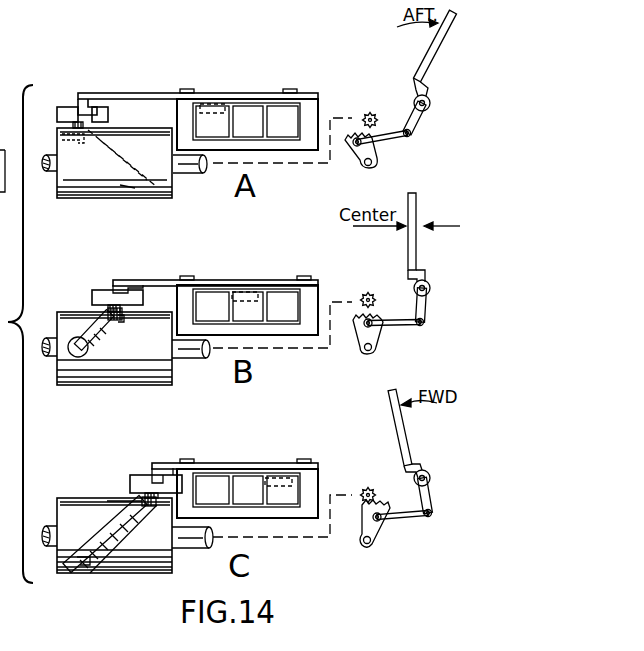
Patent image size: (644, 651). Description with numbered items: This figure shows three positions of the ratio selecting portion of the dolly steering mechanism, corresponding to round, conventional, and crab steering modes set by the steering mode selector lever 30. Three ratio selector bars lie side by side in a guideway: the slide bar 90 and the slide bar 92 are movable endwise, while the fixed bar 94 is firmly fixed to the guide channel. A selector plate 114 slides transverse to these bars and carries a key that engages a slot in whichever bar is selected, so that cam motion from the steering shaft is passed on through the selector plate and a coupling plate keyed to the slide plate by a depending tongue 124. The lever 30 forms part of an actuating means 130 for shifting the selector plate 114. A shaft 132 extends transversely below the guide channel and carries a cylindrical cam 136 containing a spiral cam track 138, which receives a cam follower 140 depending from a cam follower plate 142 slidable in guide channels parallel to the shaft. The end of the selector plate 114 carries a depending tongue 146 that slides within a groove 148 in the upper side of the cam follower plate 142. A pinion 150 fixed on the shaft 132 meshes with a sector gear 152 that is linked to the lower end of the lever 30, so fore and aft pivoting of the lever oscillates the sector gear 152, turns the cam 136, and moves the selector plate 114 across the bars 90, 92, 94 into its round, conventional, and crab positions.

The steering mode selector lever 30 is at (427, 58).
The slide bar 90 is at (210, 131).
The slide bar 92 is at (249, 122).
The fixed bar 94 is at (283, 113).
The selector plate 114 is at (141, 93).
The tongue 124 is at (211, 102).
The actuating means 130 is at (387, 138).
The shaft 132 is at (185, 167).
The cylindrical cam 136 is at (83, 184).
The spiral cam track 138 is at (135, 184).
The cam follower 140 is at (68, 142).
The cam follower plate 142 is at (56, 110).
The tongue 146 is at (86, 107).
The groove 148 is at (108, 116).
The pinion 150 is at (368, 113).
The sector gear 152 is at (362, 150).